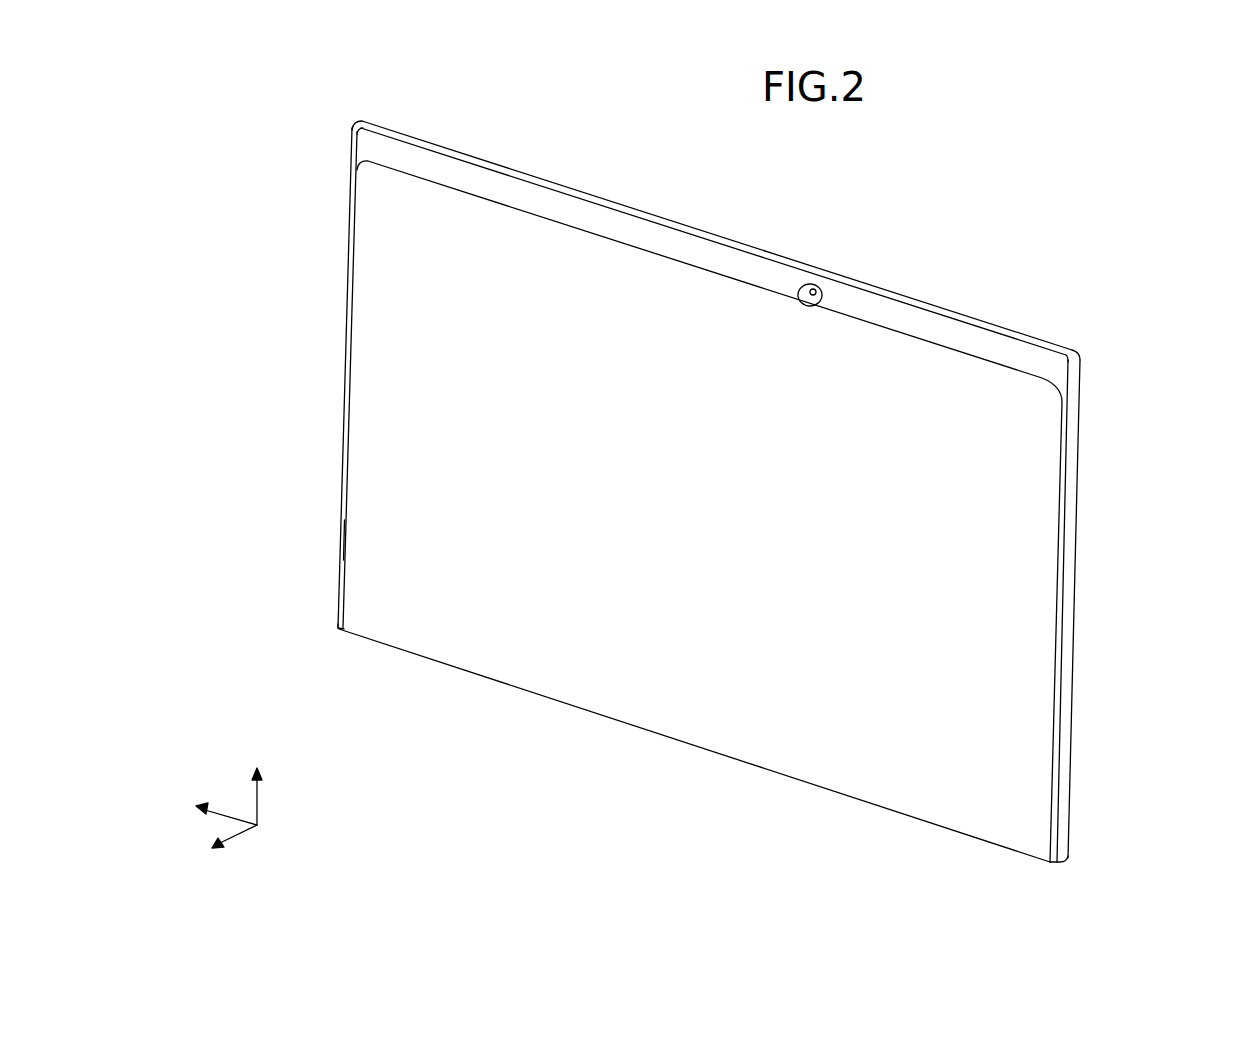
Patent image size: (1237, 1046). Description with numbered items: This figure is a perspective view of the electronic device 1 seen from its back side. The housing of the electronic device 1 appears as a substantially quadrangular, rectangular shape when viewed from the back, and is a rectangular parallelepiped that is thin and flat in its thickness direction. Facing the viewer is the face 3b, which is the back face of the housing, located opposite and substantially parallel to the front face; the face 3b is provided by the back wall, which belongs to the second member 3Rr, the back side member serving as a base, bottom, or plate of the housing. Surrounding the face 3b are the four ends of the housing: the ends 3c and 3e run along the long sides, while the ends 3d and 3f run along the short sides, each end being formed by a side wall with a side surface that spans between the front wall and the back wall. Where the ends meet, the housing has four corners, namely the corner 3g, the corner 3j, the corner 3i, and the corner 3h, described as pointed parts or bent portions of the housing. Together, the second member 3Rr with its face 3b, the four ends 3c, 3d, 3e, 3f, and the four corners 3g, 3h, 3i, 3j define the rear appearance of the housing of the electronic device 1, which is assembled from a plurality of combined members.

The electronic device 1 is at (1104, 181).
The end 3c is at (785, 258).
The end 3d is at (347, 296).
The face 3b is at (372, 536).
The end 3f is at (1070, 596).
The second member 3Rr is at (1020, 655).
The end 3e is at (368, 643).
The corner 3g is at (360, 121).
The corner 3j is at (1081, 356).
The corner 3h is at (338, 630).
The corner 3i is at (1062, 861).